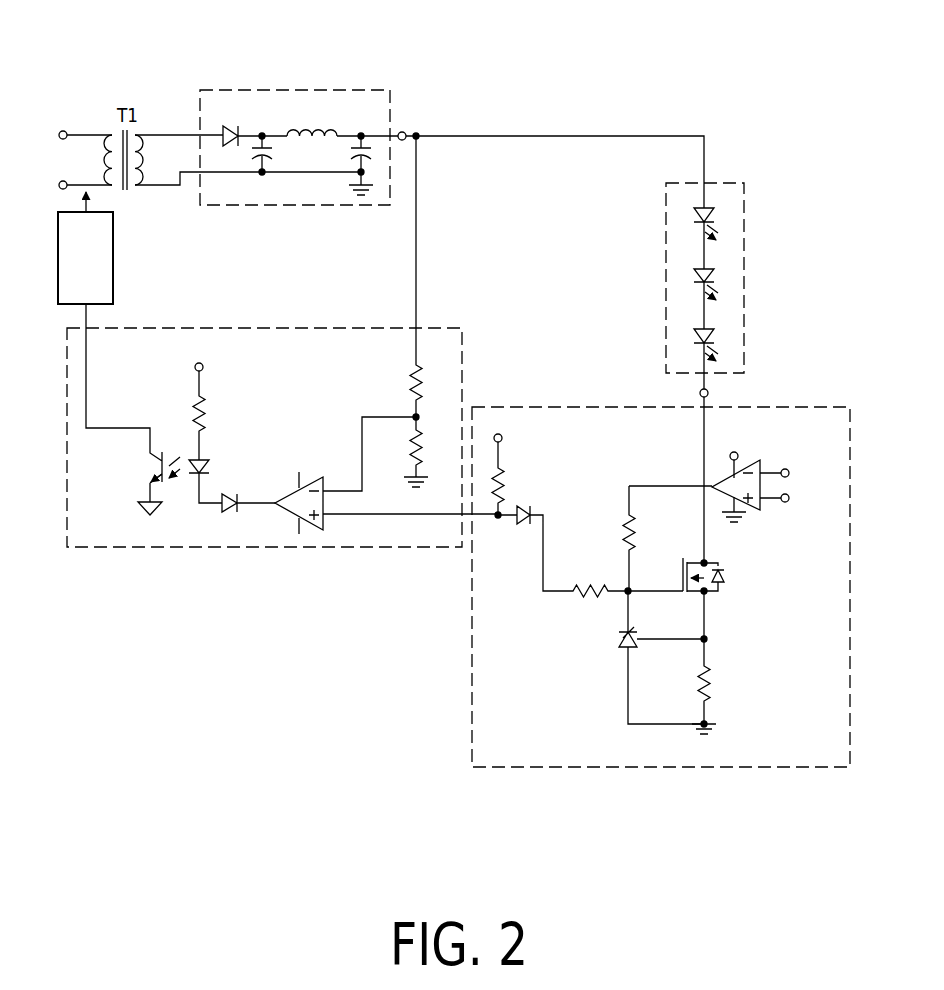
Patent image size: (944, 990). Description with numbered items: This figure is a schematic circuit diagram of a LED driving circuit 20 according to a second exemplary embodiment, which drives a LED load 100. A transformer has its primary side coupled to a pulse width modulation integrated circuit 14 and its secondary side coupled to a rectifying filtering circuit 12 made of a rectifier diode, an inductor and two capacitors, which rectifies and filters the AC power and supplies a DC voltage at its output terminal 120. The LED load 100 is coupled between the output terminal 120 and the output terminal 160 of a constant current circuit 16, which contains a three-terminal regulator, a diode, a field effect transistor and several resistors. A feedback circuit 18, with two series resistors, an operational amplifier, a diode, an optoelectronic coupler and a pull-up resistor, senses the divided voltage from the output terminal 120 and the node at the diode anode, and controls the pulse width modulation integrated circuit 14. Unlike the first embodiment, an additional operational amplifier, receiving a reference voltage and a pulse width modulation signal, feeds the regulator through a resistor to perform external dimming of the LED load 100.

The LED driving circuit 20 is at (431, 28).
The rectifying filtering circuit 12 is at (263, 206).
The pulse width modulation integrated circuit 14 is at (114, 246).
The constant current circuit 16 is at (550, 406).
The feedback circuit 18 is at (326, 327).
The LED load 100 is at (744, 297).
The output terminal of the rectifying filtering circuit 120 is at (404, 131).
The output terminal of the constant current circuit 160 is at (708, 392).